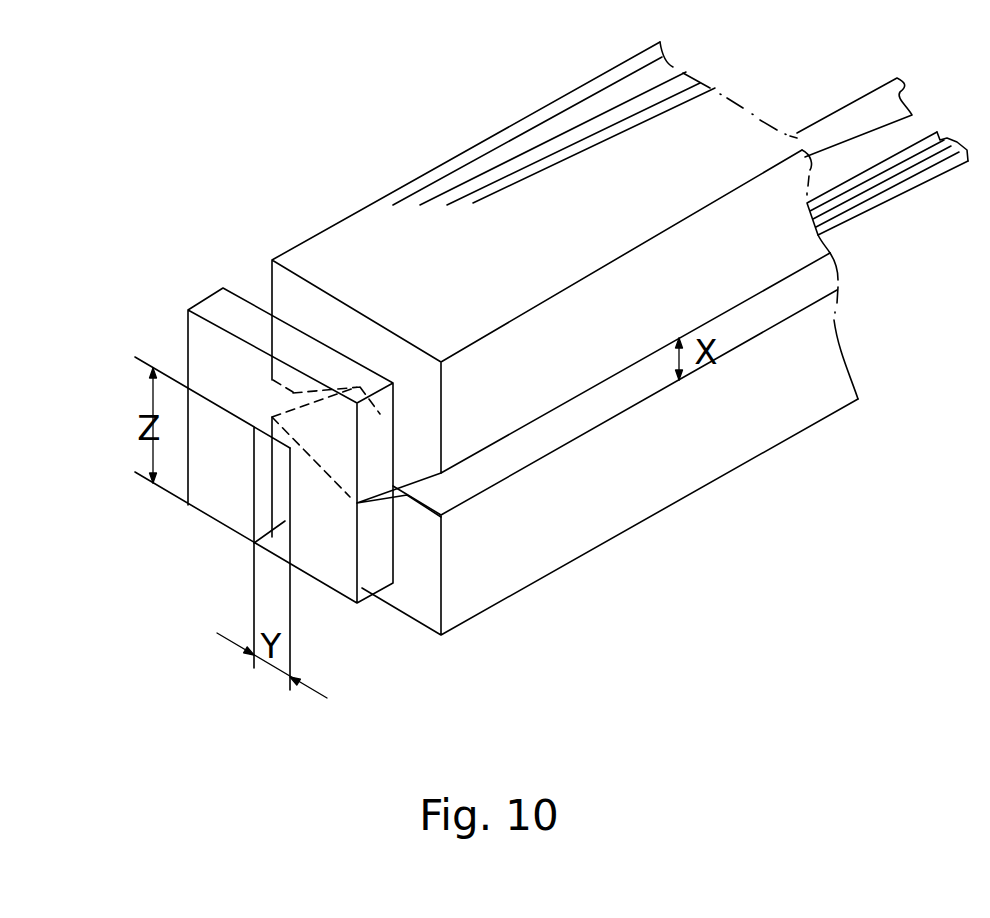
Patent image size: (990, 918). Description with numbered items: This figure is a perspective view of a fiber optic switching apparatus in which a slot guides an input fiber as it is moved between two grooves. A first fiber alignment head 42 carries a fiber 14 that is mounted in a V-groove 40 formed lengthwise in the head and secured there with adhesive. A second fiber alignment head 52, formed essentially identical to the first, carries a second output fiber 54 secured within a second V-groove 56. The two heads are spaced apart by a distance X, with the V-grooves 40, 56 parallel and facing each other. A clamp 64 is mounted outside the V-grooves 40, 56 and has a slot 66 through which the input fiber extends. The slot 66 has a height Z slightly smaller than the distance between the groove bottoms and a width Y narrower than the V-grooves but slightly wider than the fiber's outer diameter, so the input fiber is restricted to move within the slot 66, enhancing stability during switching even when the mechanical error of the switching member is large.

The fiber 14 is at (882, 205).
The V-groove 40 is at (276, 483).
The fiber alignment head 42 is at (652, 518).
The second fiber alignment head 52 is at (342, 217).
The second output fiber 54 is at (830, 115).
The second V-groove 56 is at (441, 473).
The clamp 64 is at (193, 360).
The slot 66 is at (283, 492).